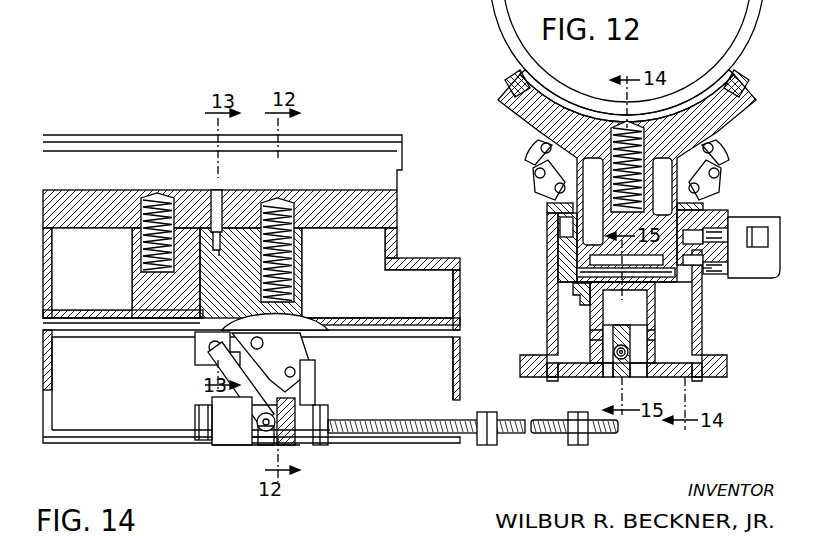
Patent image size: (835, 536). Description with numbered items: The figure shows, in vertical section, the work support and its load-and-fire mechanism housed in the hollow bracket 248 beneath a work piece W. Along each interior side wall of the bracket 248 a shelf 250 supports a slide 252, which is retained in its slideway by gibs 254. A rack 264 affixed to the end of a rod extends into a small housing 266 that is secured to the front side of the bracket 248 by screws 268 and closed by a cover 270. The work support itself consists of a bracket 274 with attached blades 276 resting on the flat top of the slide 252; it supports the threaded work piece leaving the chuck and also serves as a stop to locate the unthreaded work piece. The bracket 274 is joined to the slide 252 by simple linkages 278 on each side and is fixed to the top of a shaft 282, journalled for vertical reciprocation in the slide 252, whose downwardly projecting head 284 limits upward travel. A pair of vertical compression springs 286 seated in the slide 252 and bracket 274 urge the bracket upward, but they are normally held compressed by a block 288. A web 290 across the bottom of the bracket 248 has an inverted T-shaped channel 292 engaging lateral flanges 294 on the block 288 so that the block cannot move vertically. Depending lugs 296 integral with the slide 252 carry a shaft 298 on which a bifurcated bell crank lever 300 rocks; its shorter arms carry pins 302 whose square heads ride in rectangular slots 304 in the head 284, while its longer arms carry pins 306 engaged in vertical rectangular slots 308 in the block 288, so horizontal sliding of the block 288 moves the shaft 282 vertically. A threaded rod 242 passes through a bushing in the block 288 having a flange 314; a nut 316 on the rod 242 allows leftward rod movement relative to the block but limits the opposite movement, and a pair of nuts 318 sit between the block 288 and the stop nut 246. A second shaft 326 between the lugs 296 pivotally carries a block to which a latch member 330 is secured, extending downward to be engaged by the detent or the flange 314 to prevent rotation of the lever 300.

In FIG. 12, the wheel W is at (737, 58).
In FIG. 14, the threaded rod 242 is at (540, 436).
In FIG. 14, the adjustable stop nut 246 is at (572, 414).
In FIG. 14, the bracket 248 is at (455, 376).
In FIG. 12, the bracket 248 is at (552, 281).
In FIG. 12, the shelf 250 is at (590, 258).
In FIG. 14, the slide 252 is at (455, 291).
In FIG. 12, the slide 252 is at (558, 226).
In FIG. 12, the gib 254 is at (547, 208).
In FIG. 12, the rack 264 is at (757, 236).
In FIG. 12, the housing 266 is at (740, 270).
In FIG. 12, the screw 268 is at (706, 272).
In FIG. 12, the cover 270 is at (728, 225).
In FIG. 14, the bracket 274 is at (94, 196).
In FIG. 12, the bracket 274 is at (513, 106).
In FIG. 14, the blade 276 is at (105, 143).
In FIG. 12, the blade 276 is at (518, 80).
In FIG. 12, the linkage 278 is at (545, 175).
In FIG. 14, the shaft 282 is at (140, 297).
In FIG. 14, the head 284 is at (218, 366).
In FIG. 14, the compression spring 286 is at (153, 205).
In FIG. 12, the compression spring 286 is at (620, 130).
In FIG. 14, the block 288 is at (223, 438).
In FIG. 12, the block 288 is at (624, 377).
In FIG. 14, the web 290 is at (105, 440).
In FIG. 12, the web 290 is at (560, 376).
In FIG. 12, the channel 292 is at (603, 377).
In FIG. 14, the lateral flange 294 is at (243, 440).
In FIG. 12, the depending lug 296 is at (580, 291).
In FIG. 14, the shaft 298 is at (250, 338).
In FIG. 12, the shaft 298 is at (665, 274).
In FIG. 14, the bell crank lever 300 is at (272, 432).
In FIG. 12, the bell crank lever 300 is at (593, 316).
In FIG. 14, the pin 302 is at (208, 347).
In FIG. 14, the rectangular slot 304 is at (210, 352).
In FIG. 14, the pin 306 is at (214, 446).
In FIG. 12, the pin 306 is at (605, 351).
In FIG. 12, the rectangular slot 308 is at (632, 332).
In FIG. 14, the flange 314 is at (323, 420).
In FIG. 14, the nut 316 is at (197, 421).
In FIG. 14, the nut 318 is at (487, 447).
In FIG. 14, the second shaft 326 is at (300, 369).
In FIG. 14, the latch member 330 is at (312, 391).